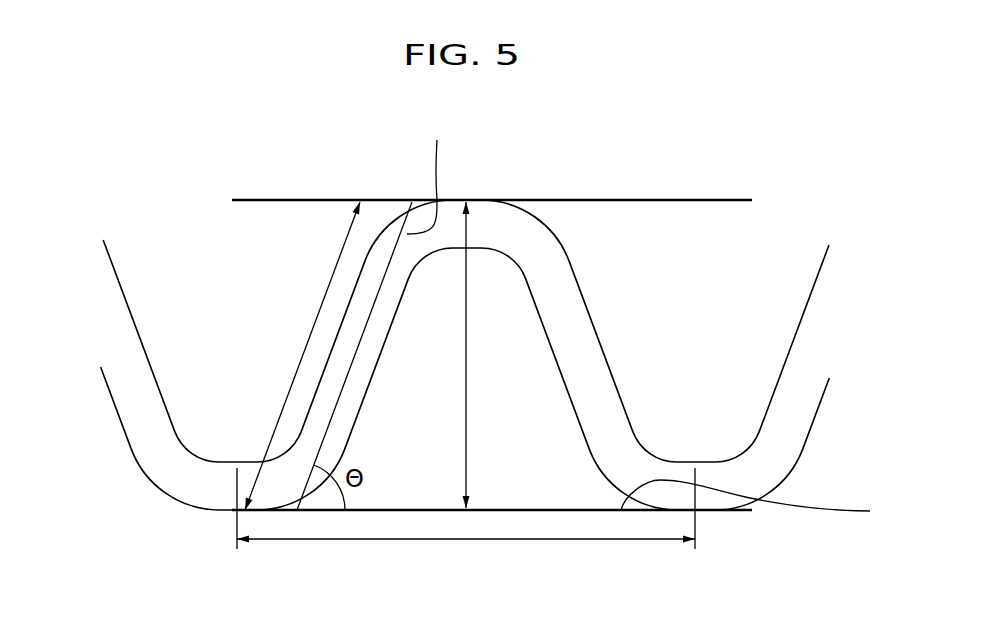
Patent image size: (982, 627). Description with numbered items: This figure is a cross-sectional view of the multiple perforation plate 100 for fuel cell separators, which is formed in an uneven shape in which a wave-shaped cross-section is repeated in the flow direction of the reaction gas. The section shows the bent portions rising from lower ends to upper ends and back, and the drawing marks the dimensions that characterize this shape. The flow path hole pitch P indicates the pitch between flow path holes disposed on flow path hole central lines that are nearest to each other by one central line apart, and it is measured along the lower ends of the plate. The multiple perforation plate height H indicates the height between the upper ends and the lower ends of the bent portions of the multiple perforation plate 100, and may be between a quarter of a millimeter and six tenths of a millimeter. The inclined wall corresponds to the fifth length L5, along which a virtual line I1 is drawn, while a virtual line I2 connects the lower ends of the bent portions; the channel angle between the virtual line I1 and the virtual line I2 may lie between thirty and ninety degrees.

The multiple perforation plate 100 is at (137, 462).
The virtual line I1 is at (429, 172).
The virtual line I2 is at (760, 508).
The multiple perforation plate height H is at (480, 355).
The flow path hole pitch P is at (466, 520).
The fifth length L5 is at (328, 356).